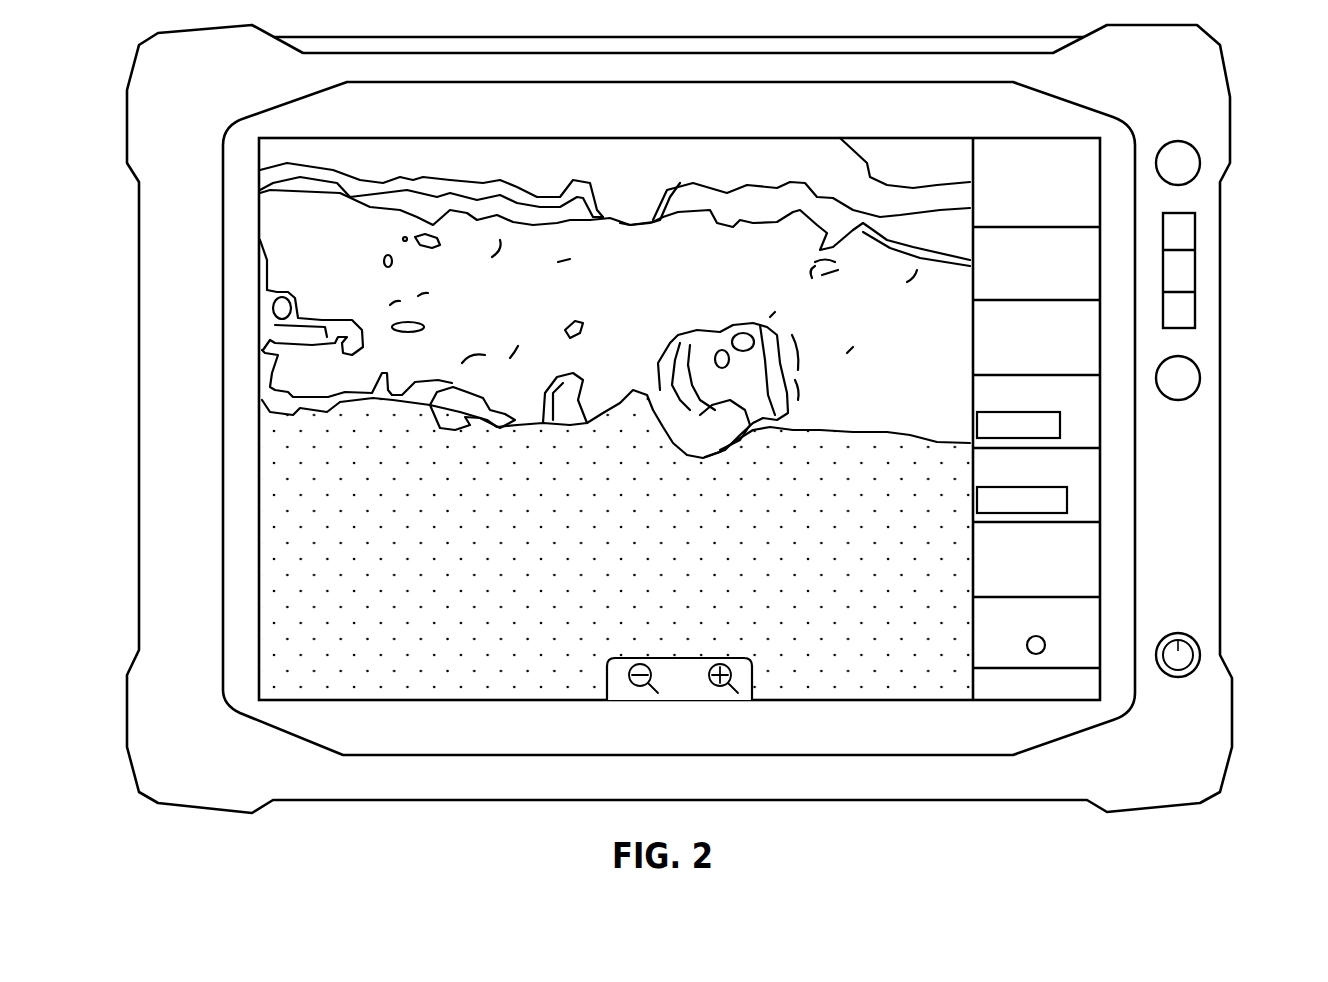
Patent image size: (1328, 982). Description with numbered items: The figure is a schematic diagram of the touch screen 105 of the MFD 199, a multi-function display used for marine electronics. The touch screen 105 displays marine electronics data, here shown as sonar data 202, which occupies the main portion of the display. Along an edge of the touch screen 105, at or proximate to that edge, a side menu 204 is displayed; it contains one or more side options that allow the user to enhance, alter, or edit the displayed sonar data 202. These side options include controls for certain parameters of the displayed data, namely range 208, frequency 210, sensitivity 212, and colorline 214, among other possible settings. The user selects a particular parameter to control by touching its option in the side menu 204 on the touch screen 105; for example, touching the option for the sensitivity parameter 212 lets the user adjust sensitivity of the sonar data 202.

The touch screen 105 is at (340, 158).
The MFD 199 is at (408, 777).
The sonar data 202 is at (702, 283).
The side menu 204 is at (1072, 685).
The range 208 is at (1088, 197).
The frequency 210 is at (1090, 277).
The sensitivity 212 is at (1093, 417).
The colorline 214 is at (1085, 488).